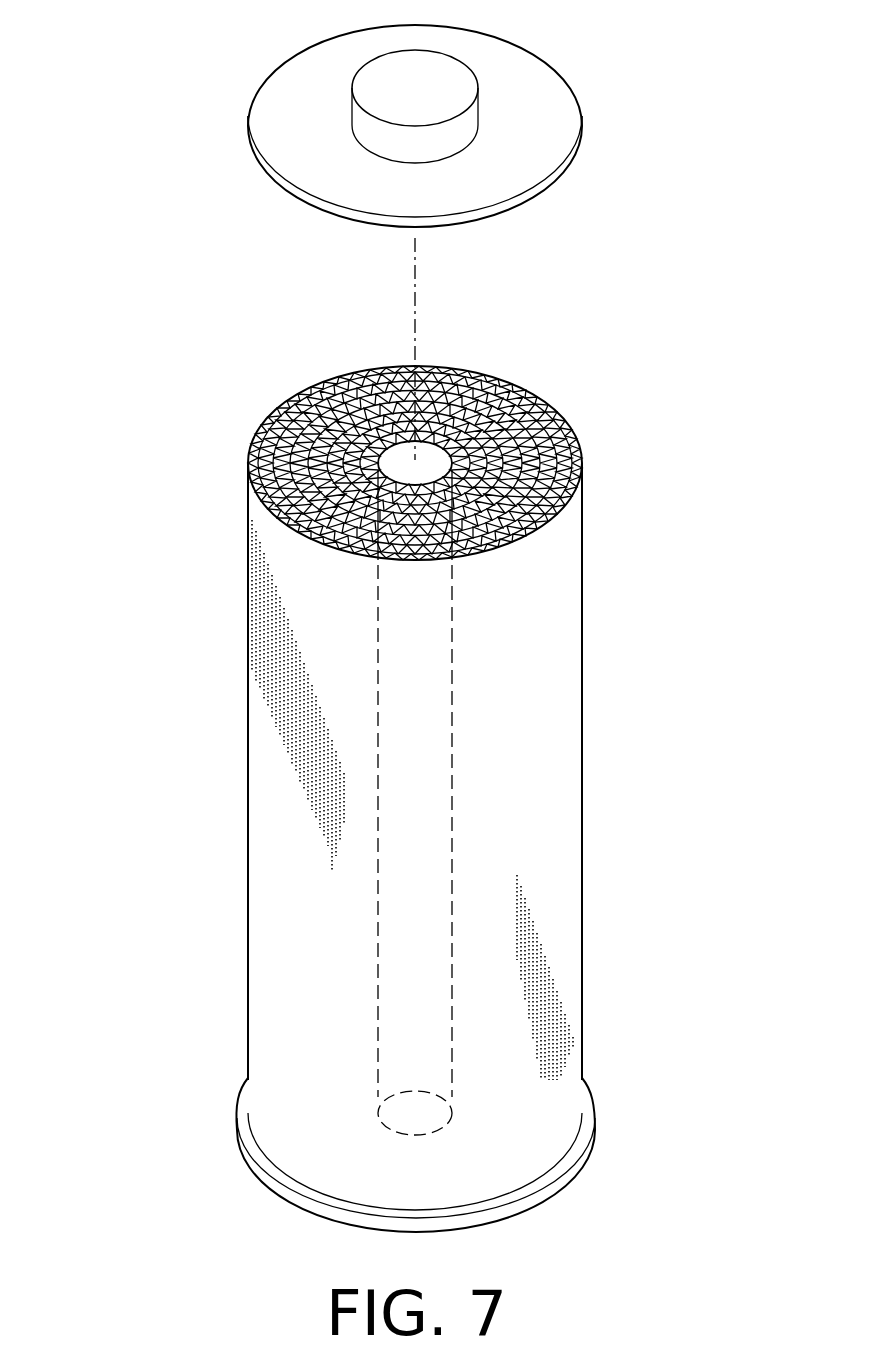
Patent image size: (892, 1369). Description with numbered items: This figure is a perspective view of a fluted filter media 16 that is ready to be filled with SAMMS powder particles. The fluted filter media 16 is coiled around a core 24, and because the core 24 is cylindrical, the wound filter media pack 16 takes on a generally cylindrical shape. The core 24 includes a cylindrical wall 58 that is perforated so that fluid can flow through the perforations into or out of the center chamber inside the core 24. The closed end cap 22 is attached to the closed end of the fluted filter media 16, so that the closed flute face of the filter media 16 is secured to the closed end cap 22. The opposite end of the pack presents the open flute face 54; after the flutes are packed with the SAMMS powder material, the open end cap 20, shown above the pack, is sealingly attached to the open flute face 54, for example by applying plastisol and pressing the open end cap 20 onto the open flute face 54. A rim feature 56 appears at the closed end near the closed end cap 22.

The fluted filter media 16 is at (582, 658).
The open end cap 20 is at (550, 110).
The closed end cap 22 is at (298, 1203).
The core 24 is at (394, 458).
The open flute face 54 is at (508, 415).
The bottom rim / flange 56 is at (568, 1148).
The cylindrical wall 58 is at (452, 573).